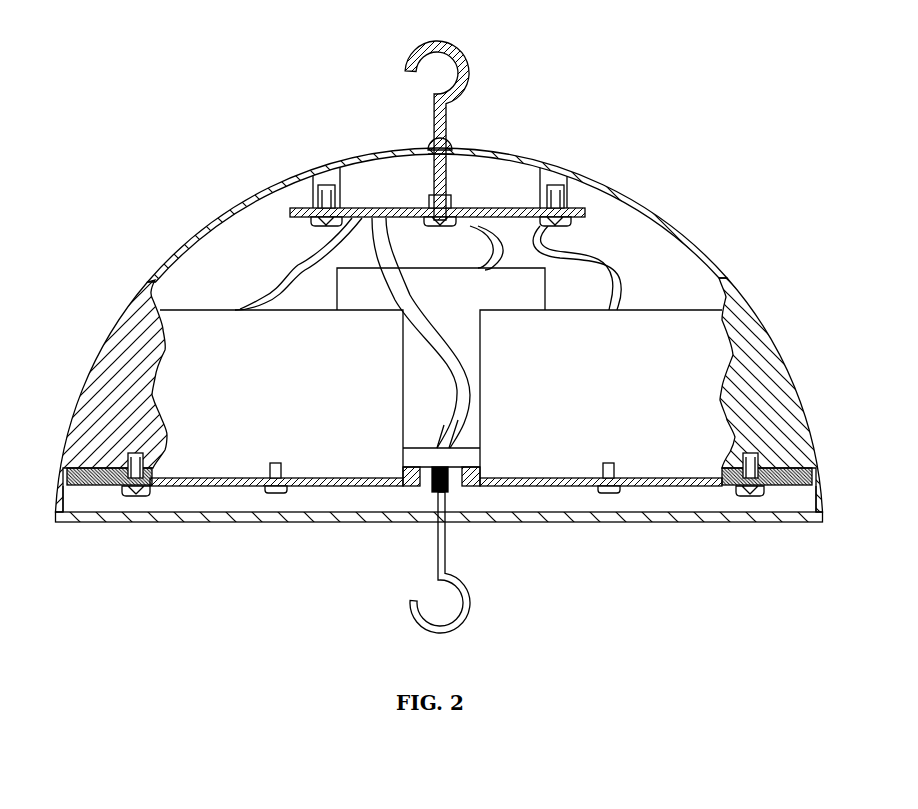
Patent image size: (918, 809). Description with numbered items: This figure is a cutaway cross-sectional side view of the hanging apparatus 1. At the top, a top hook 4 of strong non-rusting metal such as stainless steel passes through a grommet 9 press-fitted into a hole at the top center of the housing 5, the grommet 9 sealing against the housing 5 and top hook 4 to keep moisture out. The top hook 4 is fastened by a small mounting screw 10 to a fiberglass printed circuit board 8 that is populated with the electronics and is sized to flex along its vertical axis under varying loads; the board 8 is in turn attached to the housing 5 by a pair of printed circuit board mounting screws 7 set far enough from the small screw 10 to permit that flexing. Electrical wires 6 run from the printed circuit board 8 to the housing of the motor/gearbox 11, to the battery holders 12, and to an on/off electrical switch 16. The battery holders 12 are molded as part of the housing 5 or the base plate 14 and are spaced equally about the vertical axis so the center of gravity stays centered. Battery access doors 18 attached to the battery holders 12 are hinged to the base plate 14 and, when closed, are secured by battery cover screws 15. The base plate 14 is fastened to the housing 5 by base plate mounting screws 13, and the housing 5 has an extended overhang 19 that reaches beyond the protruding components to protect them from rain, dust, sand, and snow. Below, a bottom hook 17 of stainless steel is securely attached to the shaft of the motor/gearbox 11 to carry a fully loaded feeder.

The hanging apparatus 1 is at (197, 93).
The top hook 4 is at (414, 42).
The housing 5 is at (75, 410).
The electrical wires 6 is at (623, 293).
The printed circuit board mounting screws 7 is at (305, 224).
The printed circuit board 8 is at (370, 208).
The grommet 9 is at (432, 148).
The small mounting screw 10 is at (453, 218).
The motor/gearbox 11 is at (545, 288).
The battery holders 12 is at (702, 307).
The base plate mounting screws 13 is at (750, 495).
The base plate 14 is at (773, 490).
The battery cover screws 15 is at (607, 495).
The on/off electrical switch 16 is at (455, 480).
The bottom hook 17 is at (478, 590).
The battery access doors 18 is at (240, 485).
The overhang 19 is at (215, 520).